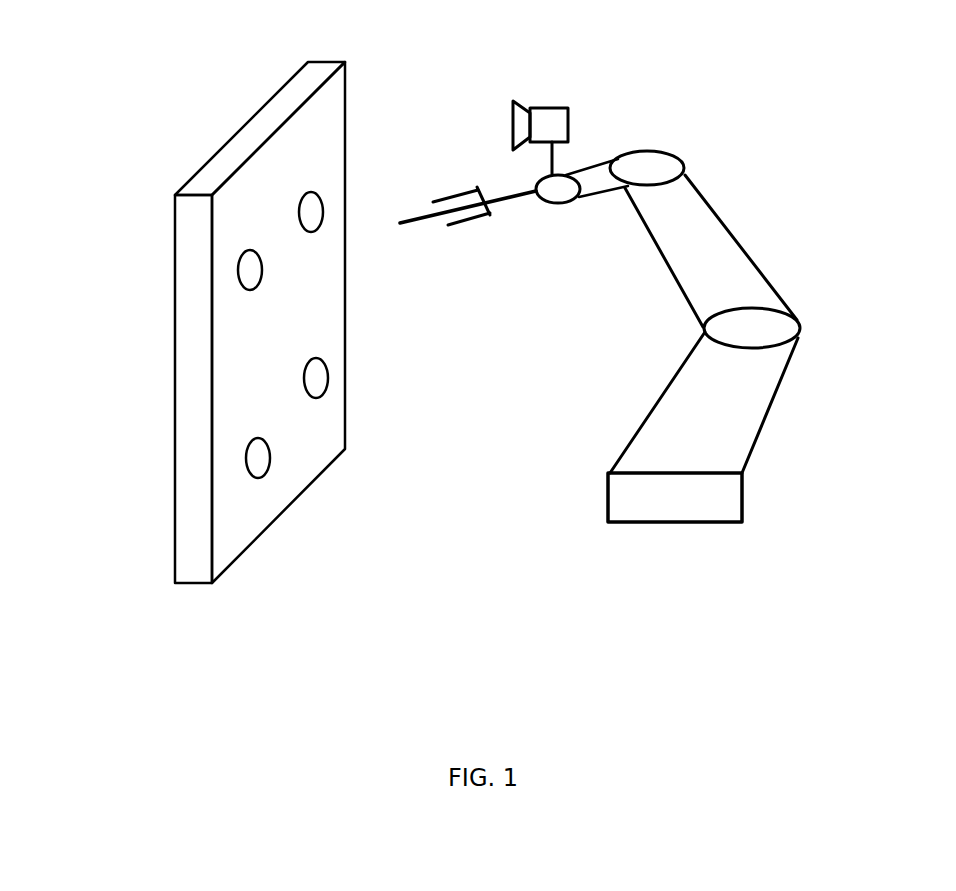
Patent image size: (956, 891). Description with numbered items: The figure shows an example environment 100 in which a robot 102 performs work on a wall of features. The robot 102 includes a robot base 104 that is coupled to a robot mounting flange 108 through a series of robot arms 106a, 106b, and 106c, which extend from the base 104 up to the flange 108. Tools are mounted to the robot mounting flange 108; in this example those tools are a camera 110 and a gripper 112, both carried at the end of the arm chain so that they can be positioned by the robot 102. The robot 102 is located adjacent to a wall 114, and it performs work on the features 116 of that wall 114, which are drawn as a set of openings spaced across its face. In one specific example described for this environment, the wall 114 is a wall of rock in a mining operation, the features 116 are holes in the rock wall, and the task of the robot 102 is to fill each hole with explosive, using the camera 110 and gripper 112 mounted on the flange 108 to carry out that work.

The environment 100 is at (168, 68).
The robot 102 is at (755, 147).
The robot base 104 is at (725, 516).
The robot arm 106a is at (772, 398).
The robot arm 106b is at (733, 252).
The robot arm 106c is at (598, 170).
The robot mounting flange 108 is at (562, 192).
The camera 110 is at (557, 115).
The gripper 112 is at (467, 222).
The wall 114 is at (178, 252).
The features 116 is at (244, 278).